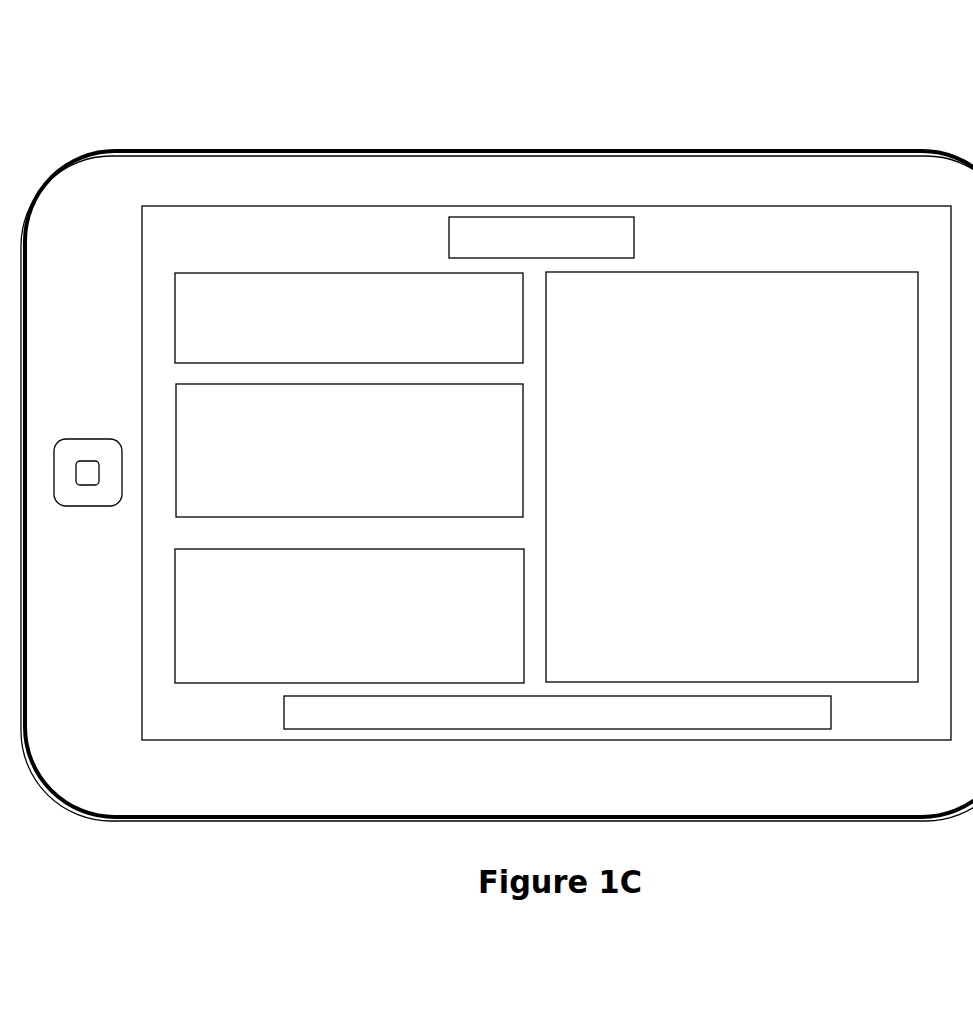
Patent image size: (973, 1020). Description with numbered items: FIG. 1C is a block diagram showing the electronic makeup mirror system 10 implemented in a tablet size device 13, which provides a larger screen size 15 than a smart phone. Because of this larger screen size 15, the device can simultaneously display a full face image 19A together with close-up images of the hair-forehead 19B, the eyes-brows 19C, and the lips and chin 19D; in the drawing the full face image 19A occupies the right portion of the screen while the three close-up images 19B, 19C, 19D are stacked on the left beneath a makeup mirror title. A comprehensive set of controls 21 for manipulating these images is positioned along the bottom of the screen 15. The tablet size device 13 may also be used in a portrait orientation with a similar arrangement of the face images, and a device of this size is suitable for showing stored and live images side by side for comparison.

The system 10 is at (499, 425).
The tablet size device 13 is at (425, 147).
The screen size 15 is at (632, 205).
The full face image 19A is at (798, 270).
The hair-forehead image 19B is at (218, 273).
The eyes-brows image 19C is at (176, 428).
The lips and chin image 19D is at (175, 619).
The controls 21 is at (468, 718).